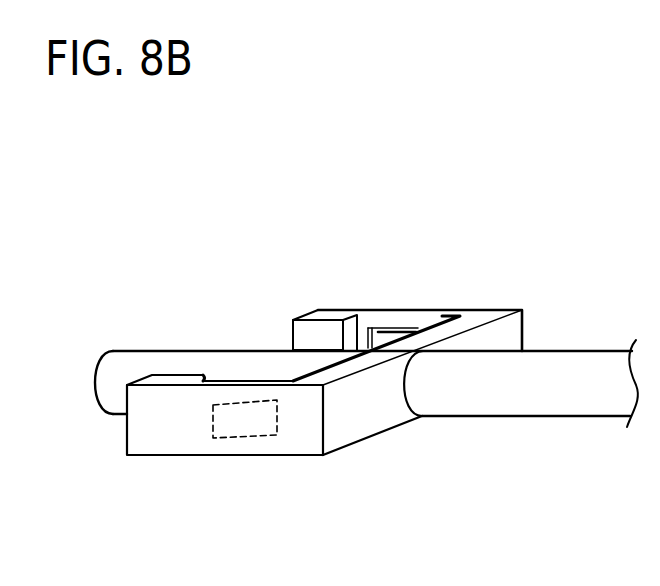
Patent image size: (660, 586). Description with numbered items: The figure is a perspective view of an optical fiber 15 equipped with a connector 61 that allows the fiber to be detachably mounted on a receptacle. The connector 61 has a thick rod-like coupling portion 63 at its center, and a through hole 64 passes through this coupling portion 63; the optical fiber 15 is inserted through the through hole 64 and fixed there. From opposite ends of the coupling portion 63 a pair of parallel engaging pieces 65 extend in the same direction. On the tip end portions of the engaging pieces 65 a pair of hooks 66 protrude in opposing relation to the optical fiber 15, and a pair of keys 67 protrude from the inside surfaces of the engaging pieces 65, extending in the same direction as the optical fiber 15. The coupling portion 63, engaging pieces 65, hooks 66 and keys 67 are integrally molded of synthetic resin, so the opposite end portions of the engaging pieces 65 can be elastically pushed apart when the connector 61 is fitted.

The optical fiber 15 is at (240, 350).
The connector 61 is at (225, 453).
The coupling portion 63 is at (365, 430).
The through hole 64 is at (408, 395).
The engaging pieces 65 is at (445, 310).
The hooks 66 is at (320, 328).
The keys 67 is at (393, 330).